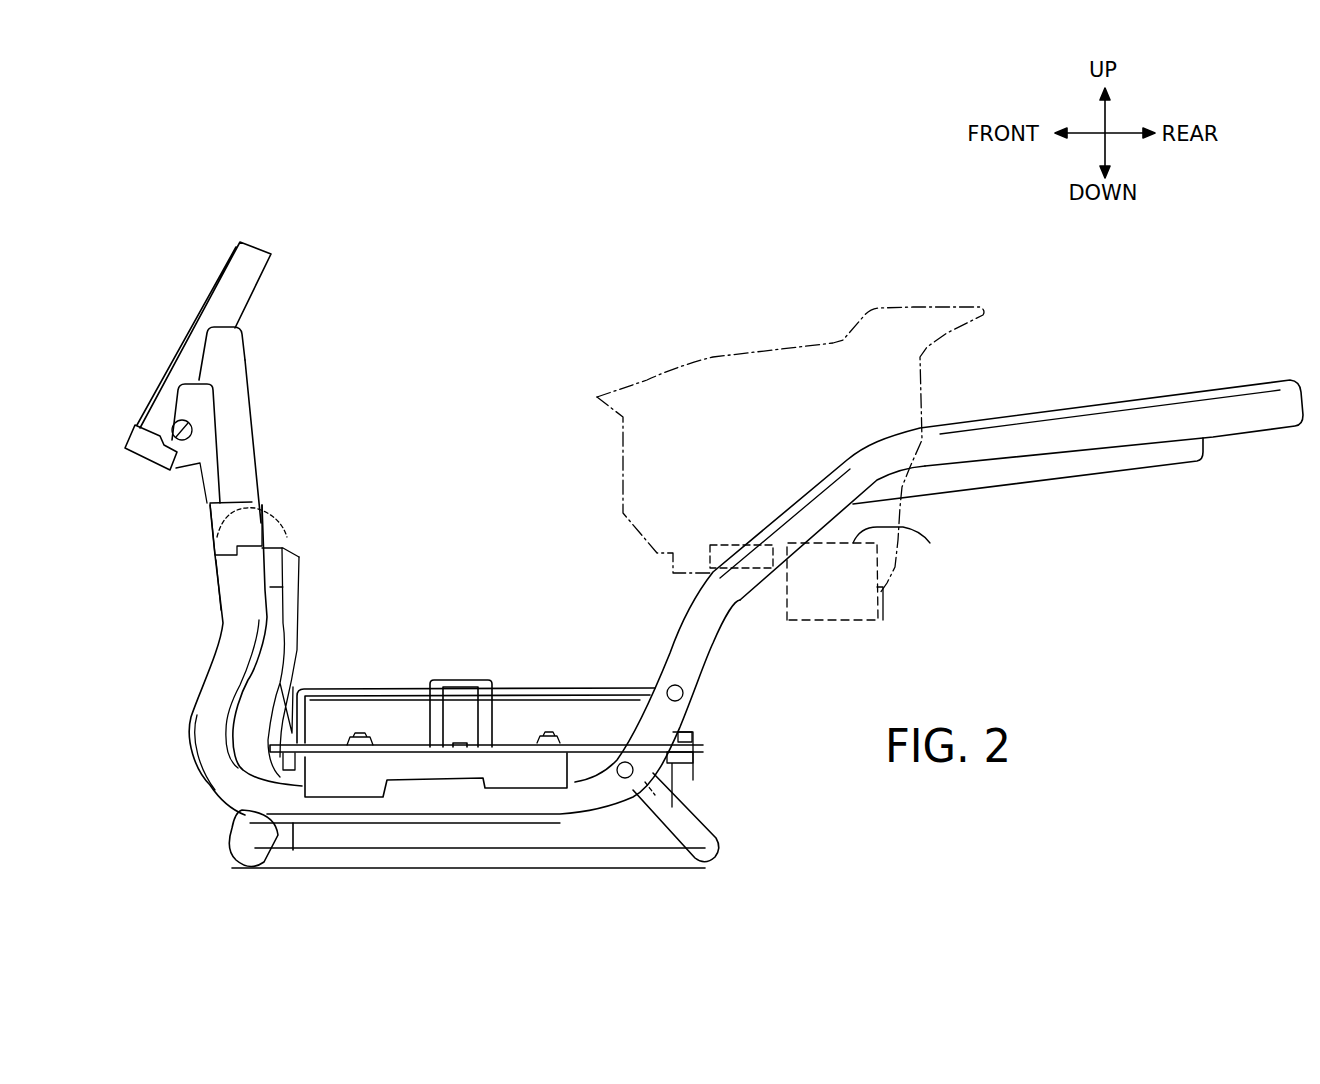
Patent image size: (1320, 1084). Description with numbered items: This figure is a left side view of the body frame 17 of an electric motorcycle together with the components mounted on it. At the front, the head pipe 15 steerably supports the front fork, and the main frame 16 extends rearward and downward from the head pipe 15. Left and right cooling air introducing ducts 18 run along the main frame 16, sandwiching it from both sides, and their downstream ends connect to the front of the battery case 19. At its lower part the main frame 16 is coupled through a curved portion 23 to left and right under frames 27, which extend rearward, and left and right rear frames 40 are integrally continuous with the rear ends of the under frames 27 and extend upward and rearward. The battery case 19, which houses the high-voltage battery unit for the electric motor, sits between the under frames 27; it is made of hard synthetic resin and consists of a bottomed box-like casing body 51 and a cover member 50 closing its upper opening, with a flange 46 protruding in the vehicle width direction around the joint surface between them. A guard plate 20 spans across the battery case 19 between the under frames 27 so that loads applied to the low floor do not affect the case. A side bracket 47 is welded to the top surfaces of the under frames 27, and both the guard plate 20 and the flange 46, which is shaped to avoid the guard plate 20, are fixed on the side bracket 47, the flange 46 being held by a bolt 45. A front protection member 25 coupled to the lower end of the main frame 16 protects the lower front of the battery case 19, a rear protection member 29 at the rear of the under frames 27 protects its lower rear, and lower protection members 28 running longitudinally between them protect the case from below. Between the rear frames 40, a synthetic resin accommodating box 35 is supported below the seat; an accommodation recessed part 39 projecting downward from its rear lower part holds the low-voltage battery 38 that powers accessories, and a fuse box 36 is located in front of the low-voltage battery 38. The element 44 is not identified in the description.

The head pipe 15 is at (225, 293).
The main frame 16 is at (233, 390).
The body frame 17 is at (252, 422).
The cooling air introducing duct 18 is at (270, 587).
The battery case 19 is at (348, 684).
The guard plate 20 is at (460, 700).
The curved portion 23 is at (207, 730).
The front protection member 25 is at (243, 842).
The under frame 27 is at (427, 803).
The lower protection member 28 is at (487, 857).
The rear protection member 29 is at (703, 843).
The accommodating box 35 is at (720, 353).
The fuse box 36 is at (720, 545).
The low-voltage battery 38 is at (930, 543).
The accommodation recessed part 39 is at (897, 577).
The rear frame 40 is at (1098, 430).
The hinge block 44 is at (197, 463).
The bolt 45 is at (362, 738).
The flange 46 is at (587, 740).
The side bracket 47 is at (521, 774).
The cover member 50 is at (390, 708).
The casing body 51 is at (362, 827).